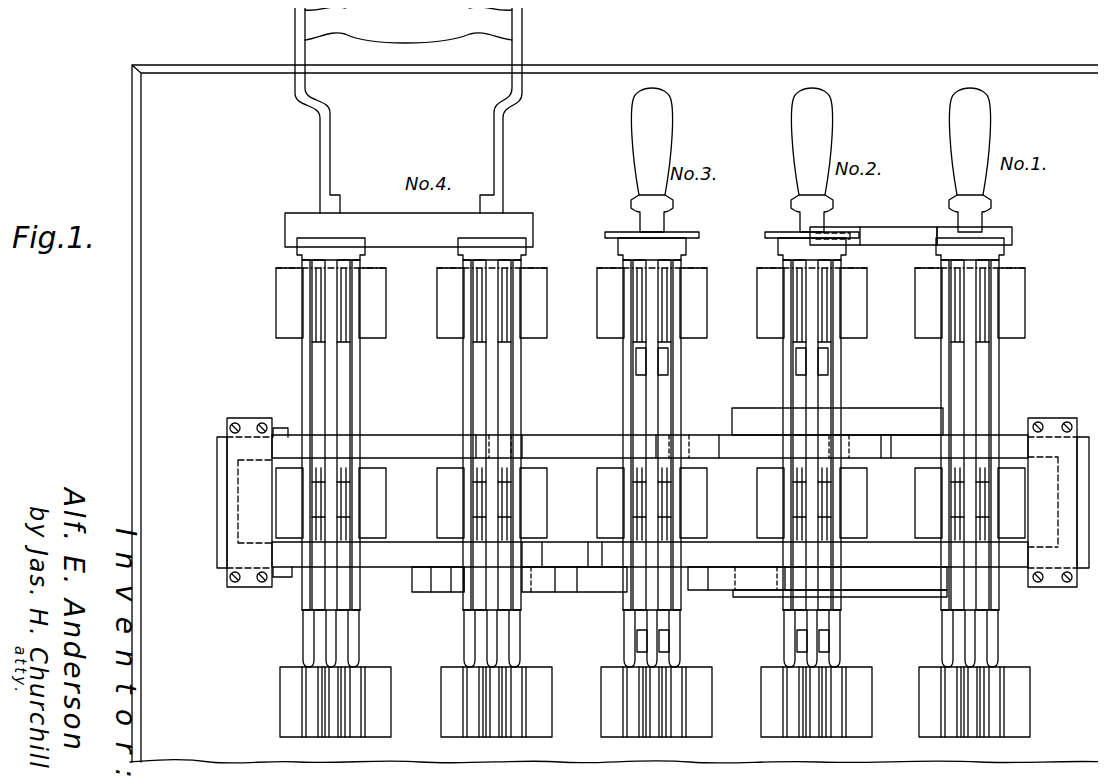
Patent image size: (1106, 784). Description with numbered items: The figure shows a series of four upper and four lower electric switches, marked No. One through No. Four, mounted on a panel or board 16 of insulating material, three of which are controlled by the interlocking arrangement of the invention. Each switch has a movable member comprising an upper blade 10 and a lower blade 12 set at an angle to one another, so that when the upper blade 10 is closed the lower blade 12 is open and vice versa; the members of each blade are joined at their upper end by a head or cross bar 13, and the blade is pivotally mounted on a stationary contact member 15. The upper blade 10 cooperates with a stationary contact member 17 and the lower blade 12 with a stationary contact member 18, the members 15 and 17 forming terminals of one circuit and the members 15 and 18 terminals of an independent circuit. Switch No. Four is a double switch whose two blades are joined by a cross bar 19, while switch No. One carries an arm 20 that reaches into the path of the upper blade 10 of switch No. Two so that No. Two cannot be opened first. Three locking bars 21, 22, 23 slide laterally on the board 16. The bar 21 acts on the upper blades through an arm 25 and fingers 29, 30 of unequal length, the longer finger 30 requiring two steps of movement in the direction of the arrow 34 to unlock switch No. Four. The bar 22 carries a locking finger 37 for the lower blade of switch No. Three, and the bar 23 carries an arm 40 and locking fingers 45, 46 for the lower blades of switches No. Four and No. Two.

The upper blade 10 is at (360, 383).
The lower blade 12 is at (361, 611).
The head or cross bar 13 is at (293, 247).
The stationary contact member 15 is at (770, 502).
The panel or board 16 is at (132, 340).
The stationary contact member 17 is at (548, 303).
The stationary contact member 18 is at (601, 697).
The cross bar 19 is at (422, 243).
The arm 20 is at (885, 236).
The bar 21 is at (410, 434).
The bar 22 is at (410, 539).
The bar 23 is at (466, 590).
The arm 25 is at (865, 456).
The finger 29 is at (700, 438).
The finger 30 is at (521, 452).
The arrow 34 is at (594, 406).
The locking finger 37 is at (590, 550).
The arm 40 is at (419, 582).
The locking finger 45 is at (504, 585).
The locking finger 46 is at (765, 592).